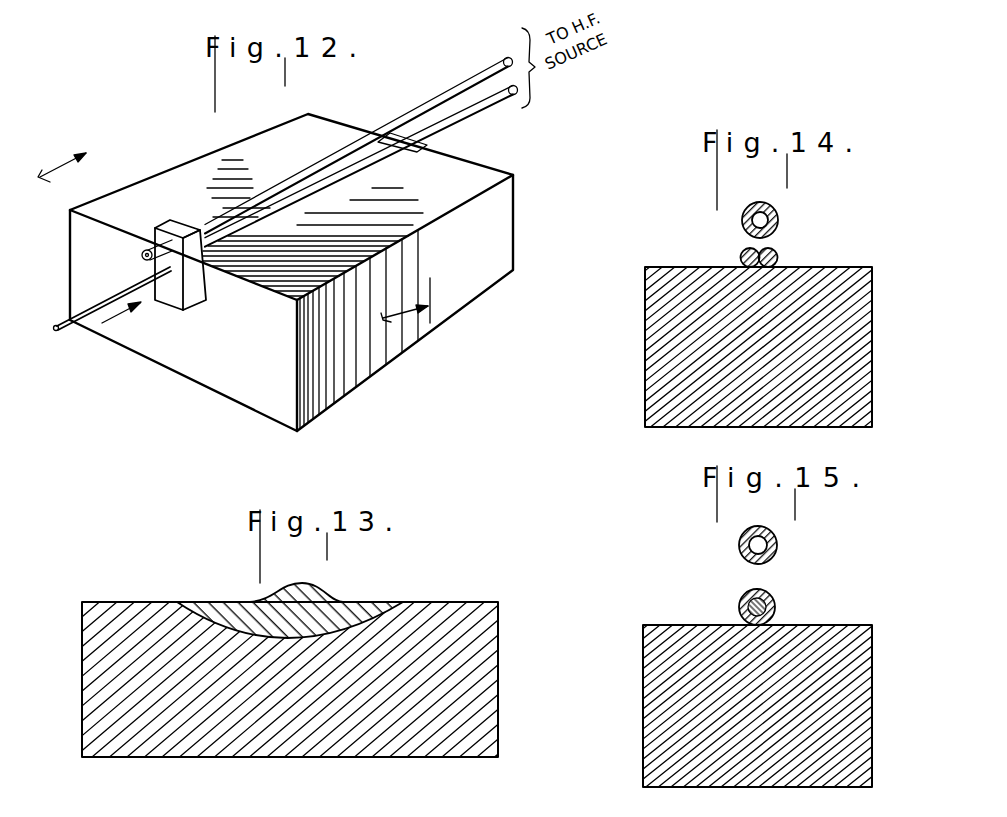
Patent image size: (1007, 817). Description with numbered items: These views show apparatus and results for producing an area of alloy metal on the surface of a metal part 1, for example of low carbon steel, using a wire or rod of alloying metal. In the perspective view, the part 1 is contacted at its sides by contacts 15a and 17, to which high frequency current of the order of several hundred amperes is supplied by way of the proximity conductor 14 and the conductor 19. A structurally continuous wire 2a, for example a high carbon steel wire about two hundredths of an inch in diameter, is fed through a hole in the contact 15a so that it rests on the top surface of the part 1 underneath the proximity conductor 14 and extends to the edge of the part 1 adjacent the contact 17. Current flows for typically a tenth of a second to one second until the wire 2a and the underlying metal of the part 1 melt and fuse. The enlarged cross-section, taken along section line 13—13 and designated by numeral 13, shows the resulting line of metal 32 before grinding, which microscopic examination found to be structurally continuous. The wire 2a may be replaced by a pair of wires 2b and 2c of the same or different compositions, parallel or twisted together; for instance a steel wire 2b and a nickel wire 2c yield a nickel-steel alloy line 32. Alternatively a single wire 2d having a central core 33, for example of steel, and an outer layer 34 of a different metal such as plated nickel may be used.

In FIG. 12, the metal part 1 is at (242, 395).
In FIG. 13, the metal part 1 is at (407, 745).
In FIG. 14, the metal part 1 is at (650, 345).
In FIG. 15, the metal part 1 is at (652, 715).
In FIG. 12, the structurally continuous wire 2a is at (65, 318).
In FIG. 14, the wire 2b is at (742, 256).
In FIG. 14, the wire 2c is at (778, 257).
In FIG. 15, the single wire 2d is at (739, 604).
In FIG. 12, the section line 13— 13 is at (249, 229).
In FIG. 12, the proximity conductor 14 is at (308, 163).
In FIG. 14, the proximity conductor 14 is at (779, 217).
In FIG. 15, the proximity conductor 14 is at (739, 539).
In FIG. 12, the contact 15a is at (151, 233).
In FIG. 12, the contact 17 is at (427, 147).
In FIG. 12, the conductor 19 is at (493, 107).
In FIG. 13, the line of metal 32 is at (345, 600).
In FIG. 15, the central core 33 is at (768, 597).
In FIG. 15, the outer layer 34 is at (774, 613).